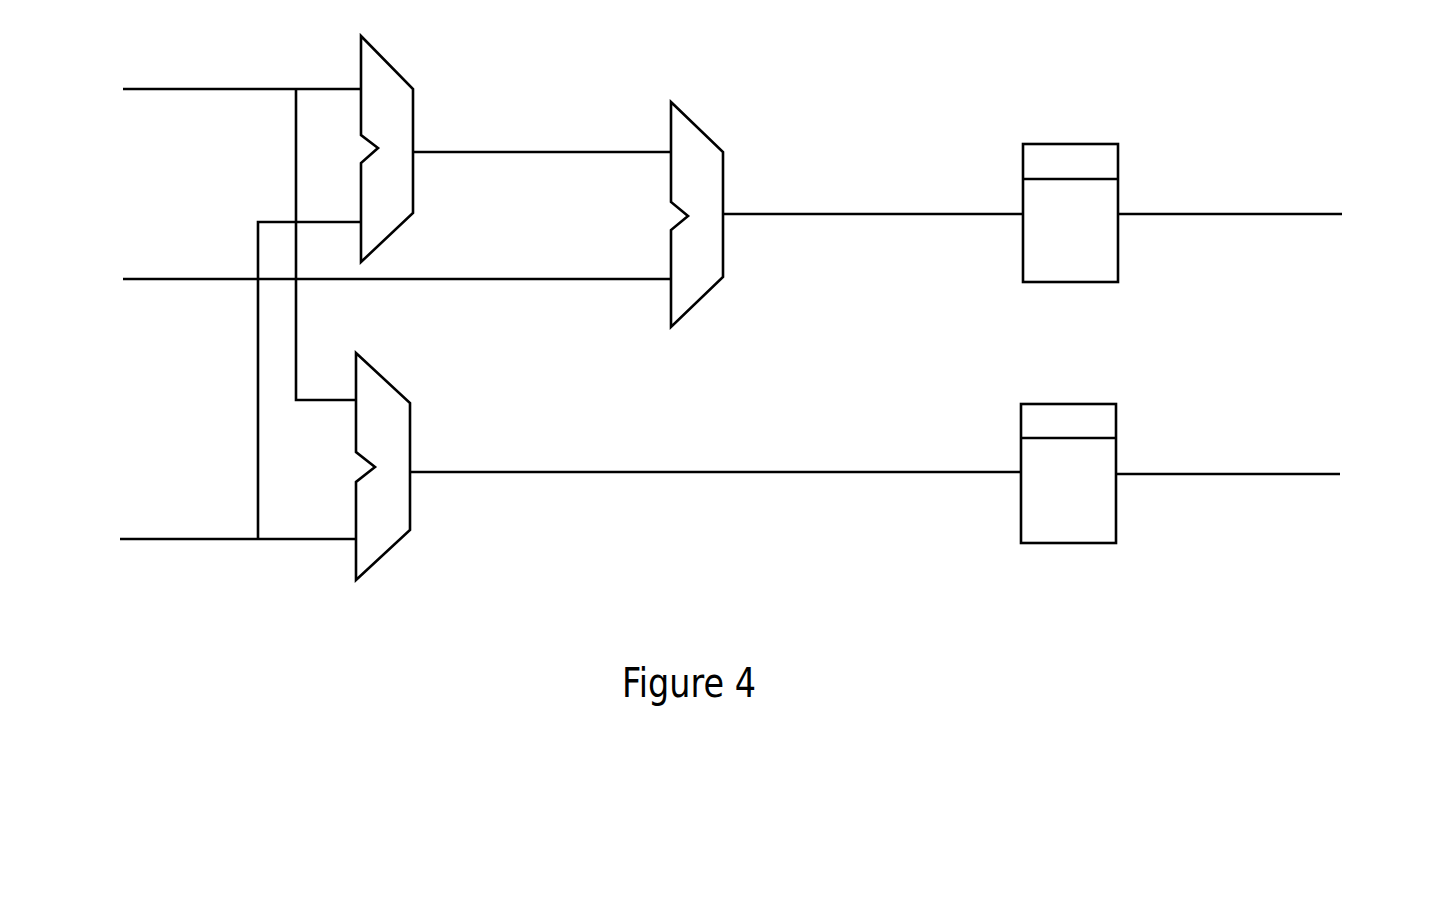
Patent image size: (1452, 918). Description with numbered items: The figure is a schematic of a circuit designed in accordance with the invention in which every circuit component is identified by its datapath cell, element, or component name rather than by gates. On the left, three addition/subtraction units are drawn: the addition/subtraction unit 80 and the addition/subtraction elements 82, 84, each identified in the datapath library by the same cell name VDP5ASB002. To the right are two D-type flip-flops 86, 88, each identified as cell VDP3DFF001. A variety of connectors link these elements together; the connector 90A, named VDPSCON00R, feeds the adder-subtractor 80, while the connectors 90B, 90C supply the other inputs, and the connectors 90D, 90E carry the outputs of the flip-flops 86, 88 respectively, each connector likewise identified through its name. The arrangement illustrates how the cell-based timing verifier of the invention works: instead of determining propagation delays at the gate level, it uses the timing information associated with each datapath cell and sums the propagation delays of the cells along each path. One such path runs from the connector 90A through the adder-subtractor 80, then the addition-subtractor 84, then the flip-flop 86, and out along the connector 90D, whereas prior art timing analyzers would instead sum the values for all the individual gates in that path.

The addition/subtraction unit 80 is at (382, 58).
The addition/subtraction element 82 is at (381, 376).
The addition/subtraction element 84 is at (691, 118).
The D-type flip-flop 86 is at (1035, 144).
The D-type flip-flop 88 is at (1040, 404).
The connector 90A is at (255, 89).
The connector 90B is at (183, 279).
The connector 90C is at (173, 539).
The connector 90D is at (1238, 214).
The connector 90E is at (1227, 474).